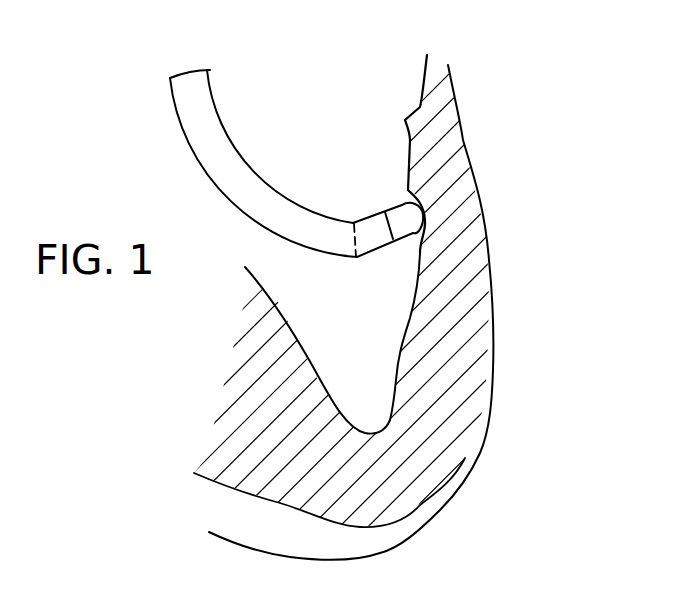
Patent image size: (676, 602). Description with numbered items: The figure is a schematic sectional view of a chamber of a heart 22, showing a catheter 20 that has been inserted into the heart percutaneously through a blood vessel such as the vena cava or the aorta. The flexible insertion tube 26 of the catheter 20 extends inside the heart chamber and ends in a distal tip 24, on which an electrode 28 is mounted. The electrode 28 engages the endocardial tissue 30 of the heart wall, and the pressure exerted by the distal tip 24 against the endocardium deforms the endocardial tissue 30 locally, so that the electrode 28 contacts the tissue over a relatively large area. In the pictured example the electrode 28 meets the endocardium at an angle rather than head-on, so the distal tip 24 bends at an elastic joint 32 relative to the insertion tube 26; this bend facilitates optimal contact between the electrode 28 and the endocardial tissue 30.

The catheter 20 is at (296, 169).
The heart 22 is at (467, 146).
The distal tip 24 is at (366, 220).
The flexible insertion tube 26 is at (265, 202).
The electrode 28 is at (401, 212).
The endocardial tissue 30 is at (410, 112).
The elastic joint 32 is at (355, 258).